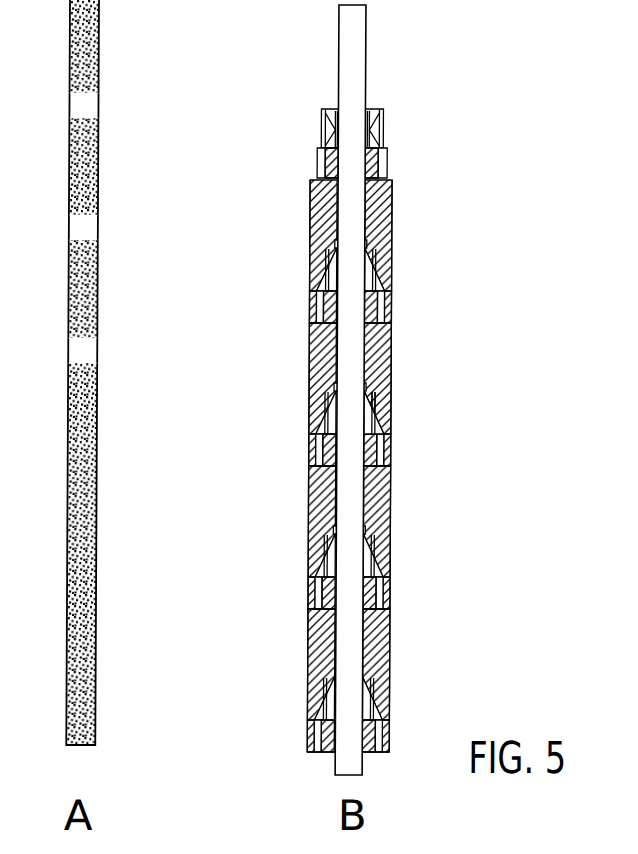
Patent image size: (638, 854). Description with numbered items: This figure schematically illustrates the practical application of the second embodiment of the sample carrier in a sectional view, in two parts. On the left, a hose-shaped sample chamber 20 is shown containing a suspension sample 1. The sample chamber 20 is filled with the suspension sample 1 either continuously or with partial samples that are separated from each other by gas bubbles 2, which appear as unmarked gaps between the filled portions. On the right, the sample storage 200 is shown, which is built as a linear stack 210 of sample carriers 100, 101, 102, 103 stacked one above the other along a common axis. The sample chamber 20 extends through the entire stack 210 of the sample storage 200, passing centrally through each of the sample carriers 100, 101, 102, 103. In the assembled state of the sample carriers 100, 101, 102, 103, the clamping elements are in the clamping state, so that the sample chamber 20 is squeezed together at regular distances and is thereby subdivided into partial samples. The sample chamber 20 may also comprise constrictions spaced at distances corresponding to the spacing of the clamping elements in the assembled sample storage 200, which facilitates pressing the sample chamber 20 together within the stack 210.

The suspension sample 1 is at (70, 527).
The gas bubbles 2 is at (79, 352).
The sample chamber 20 is at (339, 55).
The sample carrier 100 is at (322, 232).
The sample carrier 101 is at (320, 365).
The sample carrier 102 is at (318, 508).
The sample carrier 103 is at (313, 655).
The sample storage 200 is at (488, 254).
The linear stack 210 is at (388, 420).